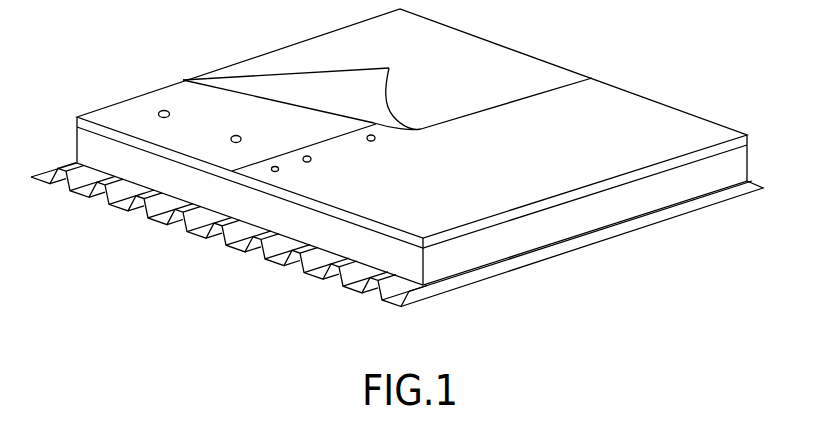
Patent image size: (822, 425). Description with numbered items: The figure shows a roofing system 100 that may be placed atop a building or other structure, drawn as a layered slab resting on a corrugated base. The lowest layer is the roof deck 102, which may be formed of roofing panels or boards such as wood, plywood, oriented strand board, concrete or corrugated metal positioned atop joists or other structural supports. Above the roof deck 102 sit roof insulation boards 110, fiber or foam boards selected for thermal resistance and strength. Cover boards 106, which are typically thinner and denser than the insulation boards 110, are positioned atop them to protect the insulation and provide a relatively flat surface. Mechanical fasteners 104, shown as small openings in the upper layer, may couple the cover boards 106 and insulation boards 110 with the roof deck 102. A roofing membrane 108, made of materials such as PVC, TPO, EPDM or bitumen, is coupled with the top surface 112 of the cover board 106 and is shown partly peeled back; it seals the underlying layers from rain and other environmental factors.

The roofing system 100 is at (676, 68).
The roof deck 102 is at (615, 234).
The mechanical fasteners 104 is at (159, 112).
The cover boards 106 is at (747, 135).
The roofing membrane 108 is at (512, 148).
The roof insulation boards 110 is at (700, 180).
The top surface 112 is at (181, 93).